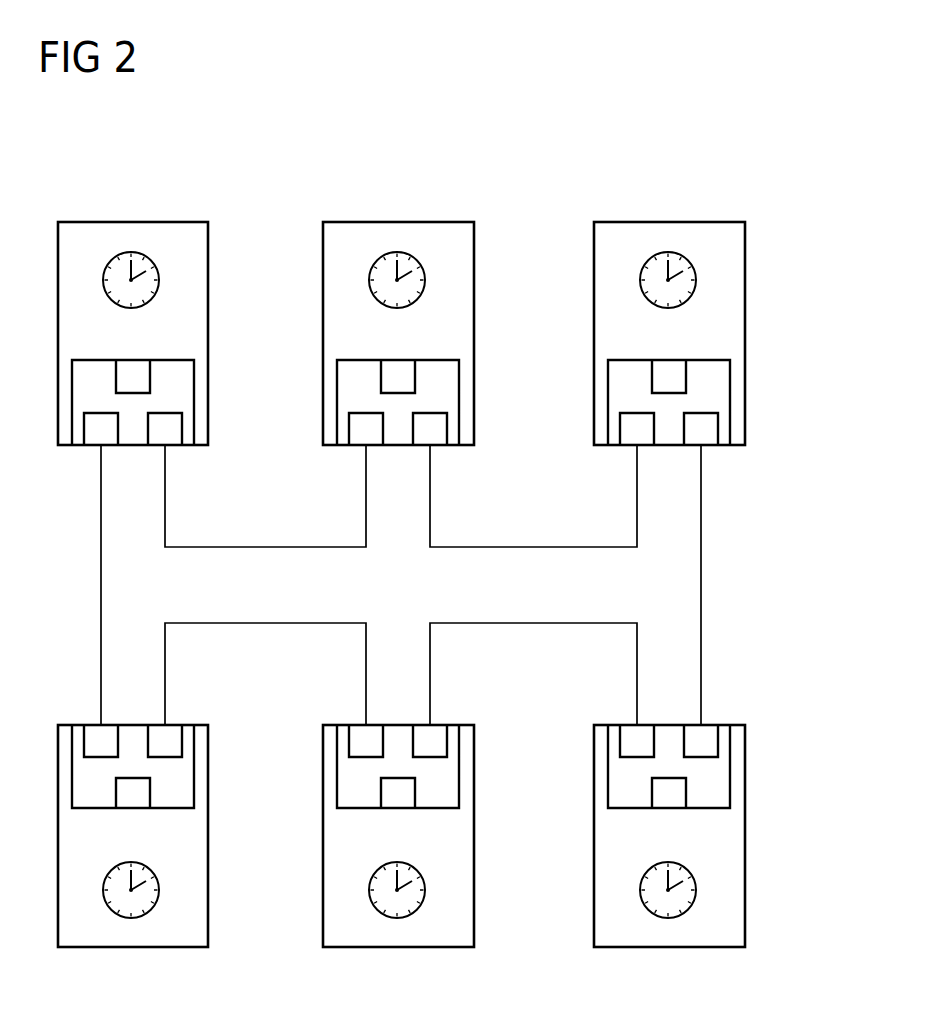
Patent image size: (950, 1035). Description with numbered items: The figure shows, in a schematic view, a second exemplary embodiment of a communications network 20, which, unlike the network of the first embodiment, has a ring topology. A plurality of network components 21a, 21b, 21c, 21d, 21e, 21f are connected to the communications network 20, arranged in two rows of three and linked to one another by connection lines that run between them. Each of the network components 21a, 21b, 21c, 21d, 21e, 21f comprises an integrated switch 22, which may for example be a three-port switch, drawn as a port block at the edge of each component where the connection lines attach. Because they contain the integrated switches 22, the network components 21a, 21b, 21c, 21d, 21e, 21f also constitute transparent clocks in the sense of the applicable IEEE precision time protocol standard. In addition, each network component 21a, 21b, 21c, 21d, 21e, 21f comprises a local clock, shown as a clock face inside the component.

The communications network 20 is at (788, 343).
The network component 21a is at (157, 222).
The network component 21b is at (430, 222).
The network component 21c is at (687, 222).
The network component 21d is at (157, 948).
The network component 21e is at (415, 948).
The network component 21f is at (688, 948).
The integrated switch 22 is at (195, 405).